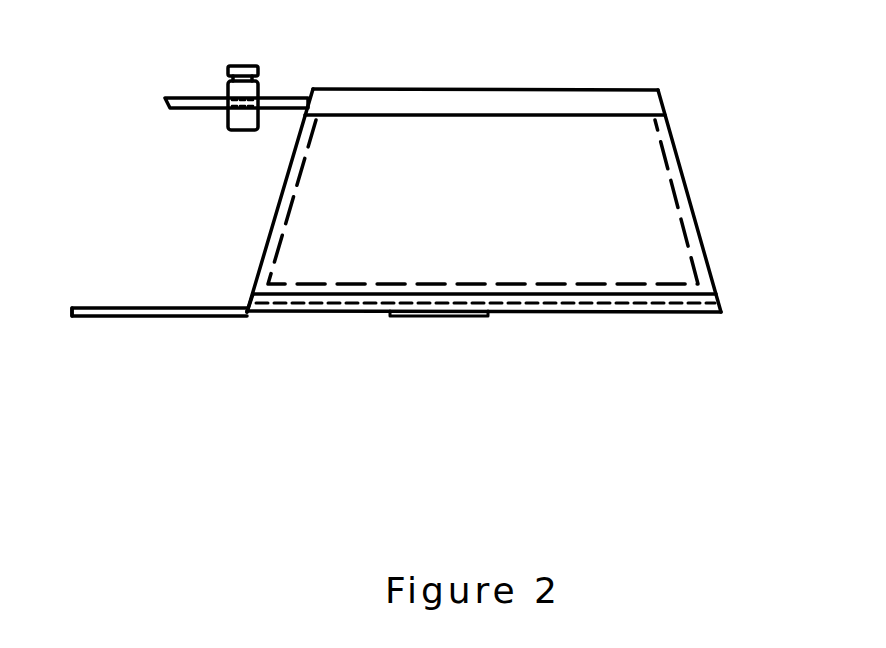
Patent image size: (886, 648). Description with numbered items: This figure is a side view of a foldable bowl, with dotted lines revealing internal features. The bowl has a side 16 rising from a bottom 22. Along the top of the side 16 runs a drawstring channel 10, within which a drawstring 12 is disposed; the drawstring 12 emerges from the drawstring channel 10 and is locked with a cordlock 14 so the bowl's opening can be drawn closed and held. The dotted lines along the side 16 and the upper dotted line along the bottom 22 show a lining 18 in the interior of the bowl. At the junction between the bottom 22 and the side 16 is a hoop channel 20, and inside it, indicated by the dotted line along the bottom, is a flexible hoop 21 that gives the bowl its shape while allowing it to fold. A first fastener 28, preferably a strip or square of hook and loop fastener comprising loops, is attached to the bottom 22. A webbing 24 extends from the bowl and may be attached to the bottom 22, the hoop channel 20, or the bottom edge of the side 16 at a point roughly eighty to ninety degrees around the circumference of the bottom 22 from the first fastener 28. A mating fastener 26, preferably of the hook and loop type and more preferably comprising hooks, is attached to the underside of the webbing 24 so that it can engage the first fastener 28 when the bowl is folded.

The drawstring channel 10 is at (642, 104).
The drawstring 12 is at (198, 101).
The cordlock 14 is at (240, 118).
The side 16 is at (690, 182).
The lining 18 is at (688, 237).
The hoop channel 20 is at (720, 301).
The flexible hoop 21 is at (266, 304).
The bottom 22 is at (669, 313).
The webbing 24 is at (123, 308).
The mating fastener 26 is at (141, 318).
The first fastener 28 is at (432, 317).